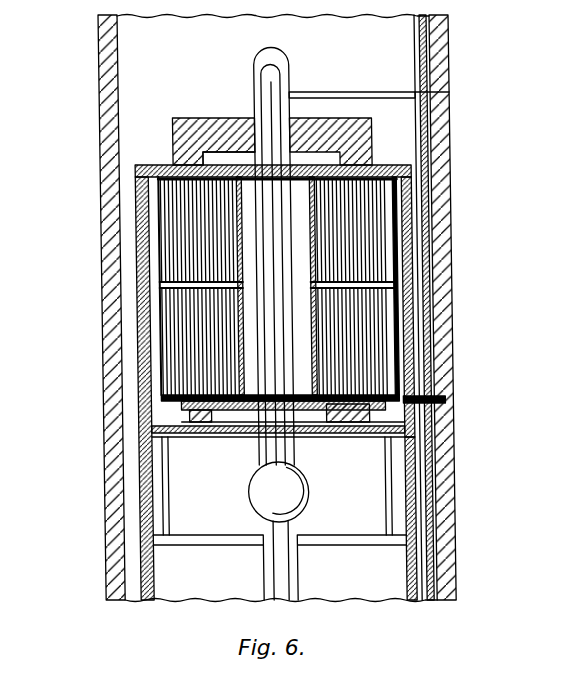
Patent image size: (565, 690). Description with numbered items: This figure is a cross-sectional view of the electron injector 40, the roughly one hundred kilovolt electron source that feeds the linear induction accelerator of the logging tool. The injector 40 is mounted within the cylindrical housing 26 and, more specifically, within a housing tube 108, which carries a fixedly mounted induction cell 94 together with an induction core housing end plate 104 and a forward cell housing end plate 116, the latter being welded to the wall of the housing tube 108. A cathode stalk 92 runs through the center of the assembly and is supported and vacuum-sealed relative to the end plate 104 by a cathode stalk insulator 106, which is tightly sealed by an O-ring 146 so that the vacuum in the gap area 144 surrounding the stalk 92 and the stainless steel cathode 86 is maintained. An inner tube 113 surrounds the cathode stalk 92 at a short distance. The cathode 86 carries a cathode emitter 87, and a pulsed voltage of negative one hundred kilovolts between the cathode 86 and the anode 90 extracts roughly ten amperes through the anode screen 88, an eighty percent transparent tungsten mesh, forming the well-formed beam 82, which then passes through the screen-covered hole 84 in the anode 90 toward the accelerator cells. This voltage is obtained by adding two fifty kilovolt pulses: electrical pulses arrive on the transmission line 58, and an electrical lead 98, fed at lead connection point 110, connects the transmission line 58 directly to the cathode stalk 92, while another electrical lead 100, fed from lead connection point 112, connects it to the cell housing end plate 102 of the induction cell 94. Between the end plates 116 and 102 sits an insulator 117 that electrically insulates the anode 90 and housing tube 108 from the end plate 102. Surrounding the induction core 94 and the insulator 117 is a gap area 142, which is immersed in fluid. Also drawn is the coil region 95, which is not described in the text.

The housing 26 is at (117, 108).
The injector 40 is at (443, 395).
The transmission line 58 is at (422, 70).
The beam 82 is at (273, 568).
The screen-covered hole 84 is at (305, 547).
The cathode 86 is at (267, 493).
The cathode emitter 87 is at (297, 515).
The anode screen 88 is at (267, 527).
The anode 90 is at (200, 542).
The cathode stalk 92 is at (290, 453).
The induction cell 94 is at (403, 328).
The right coil 95 is at (372, 370).
The electrical lead 98 is at (368, 92).
The electrical lead 100 is at (410, 440).
The cell housing end plate 102 is at (405, 460).
The induction core housing end plate 104 is at (403, 162).
The cathode stalk insulator 106 is at (185, 118).
The housing tube 108 is at (450, 262).
The lead connection point 110 is at (448, 96).
The lead connection point 112 is at (443, 405).
The inner tube 113 is at (317, 253).
The forward cell housing end plate 116 is at (152, 427).
The insulator 117 is at (218, 430).
The gap area 142 is at (155, 318).
The gap area 144 is at (250, 248).
The O-ring 146 is at (250, 118).